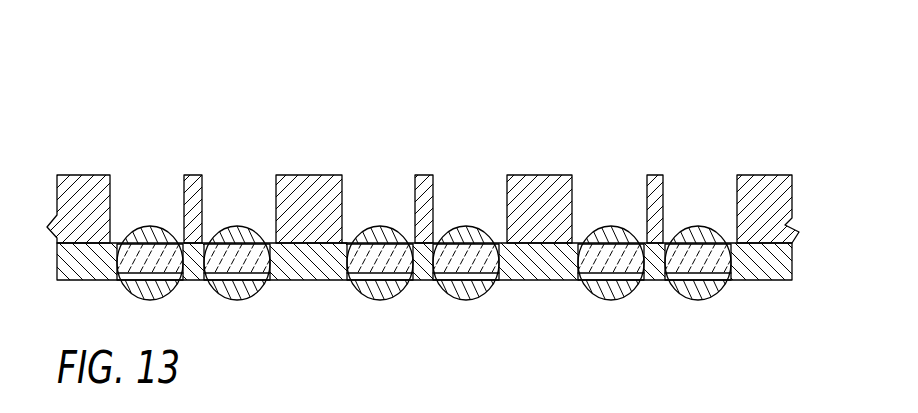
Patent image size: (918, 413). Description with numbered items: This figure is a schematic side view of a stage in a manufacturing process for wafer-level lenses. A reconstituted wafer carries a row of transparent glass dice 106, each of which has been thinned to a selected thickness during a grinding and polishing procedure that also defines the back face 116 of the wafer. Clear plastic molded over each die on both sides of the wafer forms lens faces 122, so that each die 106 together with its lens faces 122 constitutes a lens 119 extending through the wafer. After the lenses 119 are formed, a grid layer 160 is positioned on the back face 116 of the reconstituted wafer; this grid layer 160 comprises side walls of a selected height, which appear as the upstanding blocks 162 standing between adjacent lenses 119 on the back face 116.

The glass die 106 is at (120, 258).
The back face of the reconstituted wafer 116 is at (349, 235).
The lens 119 is at (400, 322).
The lens face 122 is at (596, 229).
The grid layer 160 is at (572, 150).
The spacer blocks 162 is at (290, 175).